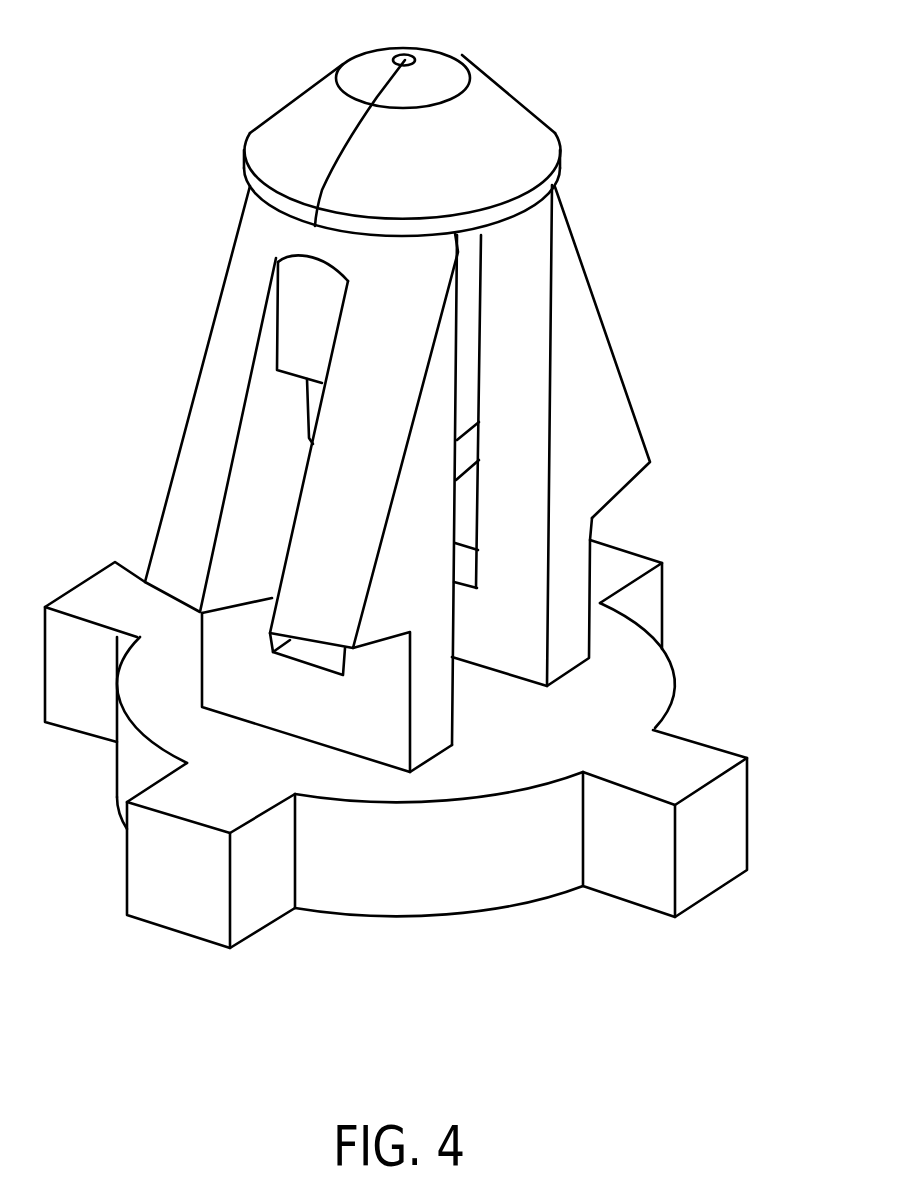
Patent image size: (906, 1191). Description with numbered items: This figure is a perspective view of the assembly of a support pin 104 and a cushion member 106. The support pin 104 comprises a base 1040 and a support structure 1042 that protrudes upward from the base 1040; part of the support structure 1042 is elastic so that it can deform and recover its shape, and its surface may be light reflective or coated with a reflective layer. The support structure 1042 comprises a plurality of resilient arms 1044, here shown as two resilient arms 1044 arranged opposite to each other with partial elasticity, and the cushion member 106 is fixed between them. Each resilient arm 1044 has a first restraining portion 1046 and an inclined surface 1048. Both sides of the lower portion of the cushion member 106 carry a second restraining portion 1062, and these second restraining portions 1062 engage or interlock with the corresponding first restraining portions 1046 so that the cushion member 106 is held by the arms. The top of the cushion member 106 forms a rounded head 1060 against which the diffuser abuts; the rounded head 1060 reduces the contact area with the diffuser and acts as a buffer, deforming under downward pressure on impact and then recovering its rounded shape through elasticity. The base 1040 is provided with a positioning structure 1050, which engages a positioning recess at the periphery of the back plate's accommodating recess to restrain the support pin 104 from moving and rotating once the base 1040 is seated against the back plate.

The support pin 104 is at (168, 478).
The cushion member 106 is at (495, 75).
The base 1040 is at (408, 918).
The support structure 1042 is at (706, 201).
The resilient arms 1044 is at (573, 230).
The first restraining portion 1046 is at (305, 380).
The inclined surface 1048 is at (623, 492).
The positioning structure 1050 is at (172, 931).
The rounded head 1060 is at (297, 115).
The second restraining portion 1062 is at (315, 405).